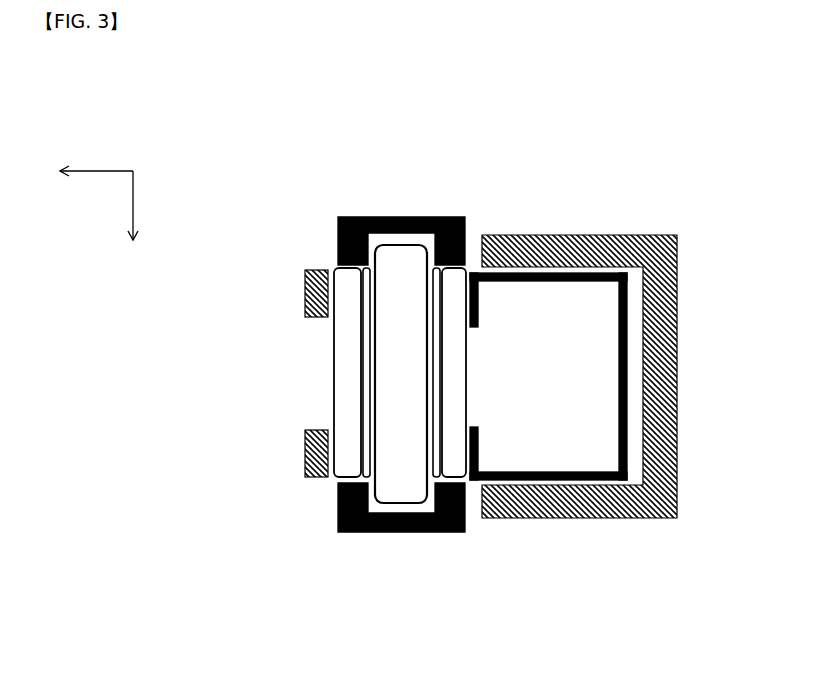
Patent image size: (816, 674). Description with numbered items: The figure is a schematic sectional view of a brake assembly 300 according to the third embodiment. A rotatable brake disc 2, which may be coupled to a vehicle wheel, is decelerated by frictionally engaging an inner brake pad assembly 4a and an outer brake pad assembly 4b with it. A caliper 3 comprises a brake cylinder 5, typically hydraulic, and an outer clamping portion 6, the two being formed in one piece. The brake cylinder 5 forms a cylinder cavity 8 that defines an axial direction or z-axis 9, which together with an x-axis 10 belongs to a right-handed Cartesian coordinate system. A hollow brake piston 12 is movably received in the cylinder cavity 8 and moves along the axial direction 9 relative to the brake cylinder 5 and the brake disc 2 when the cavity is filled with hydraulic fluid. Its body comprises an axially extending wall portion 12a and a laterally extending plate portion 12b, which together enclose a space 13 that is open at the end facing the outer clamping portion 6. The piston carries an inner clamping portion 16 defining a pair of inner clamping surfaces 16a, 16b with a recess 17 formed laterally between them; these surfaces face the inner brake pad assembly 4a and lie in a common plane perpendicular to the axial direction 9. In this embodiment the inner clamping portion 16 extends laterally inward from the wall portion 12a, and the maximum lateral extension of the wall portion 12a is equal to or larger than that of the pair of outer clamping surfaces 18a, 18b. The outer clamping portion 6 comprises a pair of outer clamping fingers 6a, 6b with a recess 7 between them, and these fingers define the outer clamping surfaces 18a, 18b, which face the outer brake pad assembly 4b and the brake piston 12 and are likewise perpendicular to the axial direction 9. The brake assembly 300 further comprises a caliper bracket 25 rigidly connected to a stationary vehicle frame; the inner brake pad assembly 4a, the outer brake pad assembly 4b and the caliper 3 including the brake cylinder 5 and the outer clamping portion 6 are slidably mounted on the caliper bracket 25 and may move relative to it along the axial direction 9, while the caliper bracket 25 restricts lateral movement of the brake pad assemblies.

The brake disc 2 is at (410, 391).
The caliper 3 is at (303, 232).
The inner brake pad assembly 4a is at (470, 487).
The outer brake pad assembly 4b is at (328, 484).
The brake cylinder 5 is at (545, 237).
The outer clamping portion 6 is at (280, 484).
The outer clamping finger 6a is at (320, 289).
The outer clamping finger 6b is at (320, 459).
The recess 7 is at (310, 374).
The cylinder cavity 8 is at (632, 362).
The z-axis 9 is at (100, 172).
The x-axis 10 is at (133, 205).
The brake piston 12 is at (548, 376).
The axially extending wall portion 12a is at (555, 283).
The laterally extending plate portion 12b is at (617, 363).
The space 13 is at (575, 388).
The inner clamping portion 16 is at (478, 307).
The inner clamping surface 16a is at (470, 308).
The inner clamping surface 16b is at (470, 460).
The recess 17 is at (478, 378).
The outer clamping surface 18a is at (318, 289).
The outer clamping surface 18b is at (318, 459).
The caliper bracket 25 is at (396, 214).
The brake assembly 300 is at (622, 573).